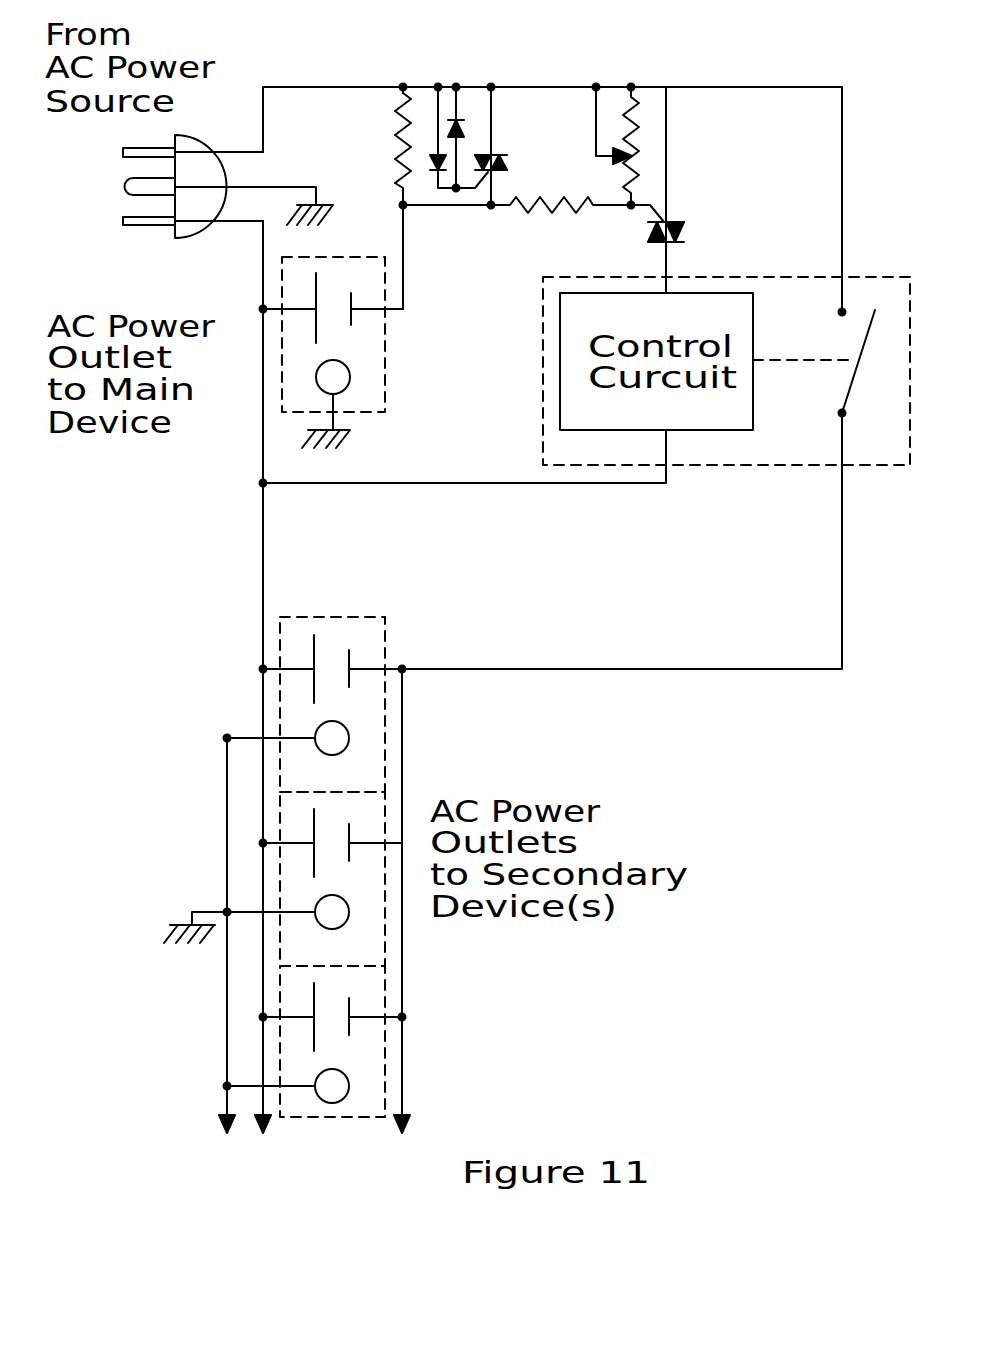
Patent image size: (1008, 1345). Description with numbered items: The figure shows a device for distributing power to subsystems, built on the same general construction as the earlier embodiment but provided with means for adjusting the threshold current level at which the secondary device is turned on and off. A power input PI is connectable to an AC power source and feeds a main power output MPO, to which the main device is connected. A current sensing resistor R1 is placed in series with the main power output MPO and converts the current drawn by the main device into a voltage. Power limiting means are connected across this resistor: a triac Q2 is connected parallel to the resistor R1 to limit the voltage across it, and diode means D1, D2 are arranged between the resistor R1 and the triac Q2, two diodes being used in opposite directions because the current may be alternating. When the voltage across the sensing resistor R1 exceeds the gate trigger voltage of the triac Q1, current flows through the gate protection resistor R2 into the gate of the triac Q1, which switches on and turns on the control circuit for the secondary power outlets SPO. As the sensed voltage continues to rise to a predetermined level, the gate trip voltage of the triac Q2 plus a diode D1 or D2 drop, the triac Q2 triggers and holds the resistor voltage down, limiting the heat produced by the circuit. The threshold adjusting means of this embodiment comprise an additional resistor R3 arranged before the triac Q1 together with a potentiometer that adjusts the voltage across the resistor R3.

The power input PI is at (198, 186).
The current sensing resistor R1 is at (377, 197).
The diode D1 is at (450, 114).
The diode D2 is at (476, 112).
The triac Q2 is at (516, 146).
The gate protection resistor R2 is at (533, 228).
The additional resistor R3 is at (620, 122).
The triac Q1 is at (688, 249).
The main power output MPO is at (359, 352).
The secondary power outlet SPO is at (359, 867).